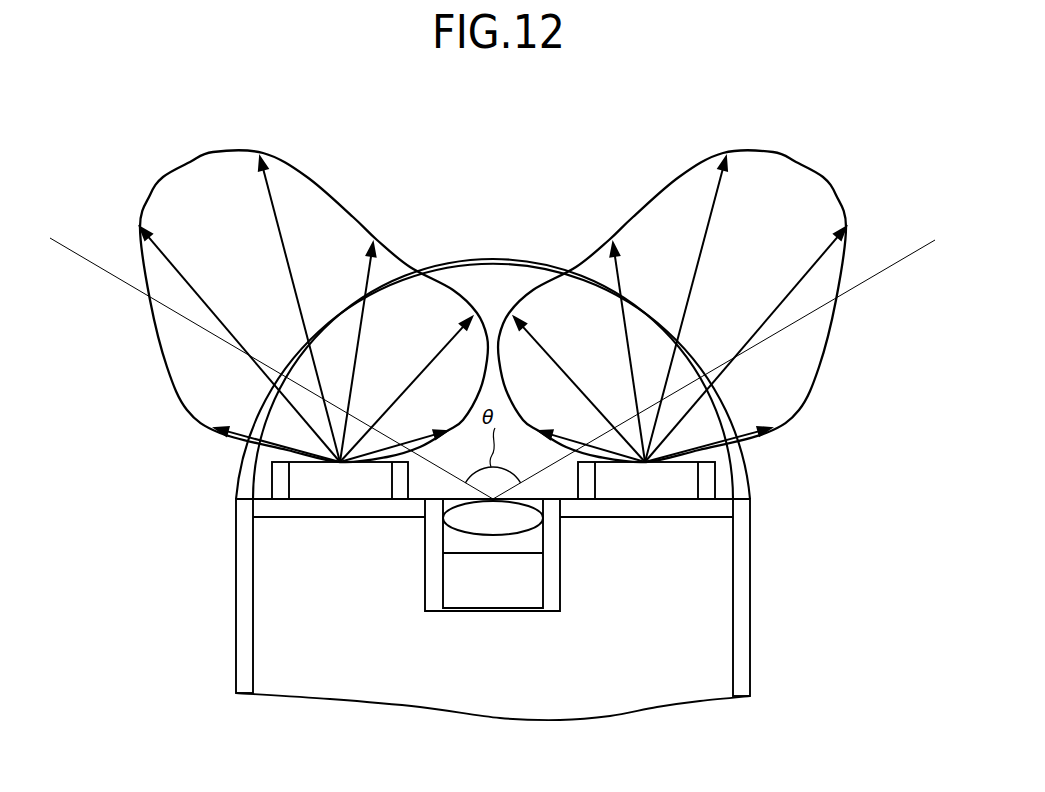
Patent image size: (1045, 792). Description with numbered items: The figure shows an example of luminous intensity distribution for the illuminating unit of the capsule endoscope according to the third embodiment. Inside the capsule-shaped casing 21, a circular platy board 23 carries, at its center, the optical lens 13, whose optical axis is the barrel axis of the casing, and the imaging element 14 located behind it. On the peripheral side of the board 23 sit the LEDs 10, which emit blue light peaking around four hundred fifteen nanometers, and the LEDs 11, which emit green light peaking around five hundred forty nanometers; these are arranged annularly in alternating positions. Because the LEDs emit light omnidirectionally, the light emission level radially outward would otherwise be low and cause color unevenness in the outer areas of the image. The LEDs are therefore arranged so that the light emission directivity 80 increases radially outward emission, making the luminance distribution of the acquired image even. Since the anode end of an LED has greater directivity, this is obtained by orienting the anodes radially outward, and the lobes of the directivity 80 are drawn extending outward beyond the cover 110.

The LED 10 is at (489, 480).
The LED 11 is at (272, 478).
The optical lens 13 is at (540, 520).
The imaging element 14 is at (482, 612).
The capsule-shaped casing 21 is at (752, 612).
The board 23 is at (718, 522).
The light emission directivity 80 is at (236, 152).
The lens 110 is at (533, 250).